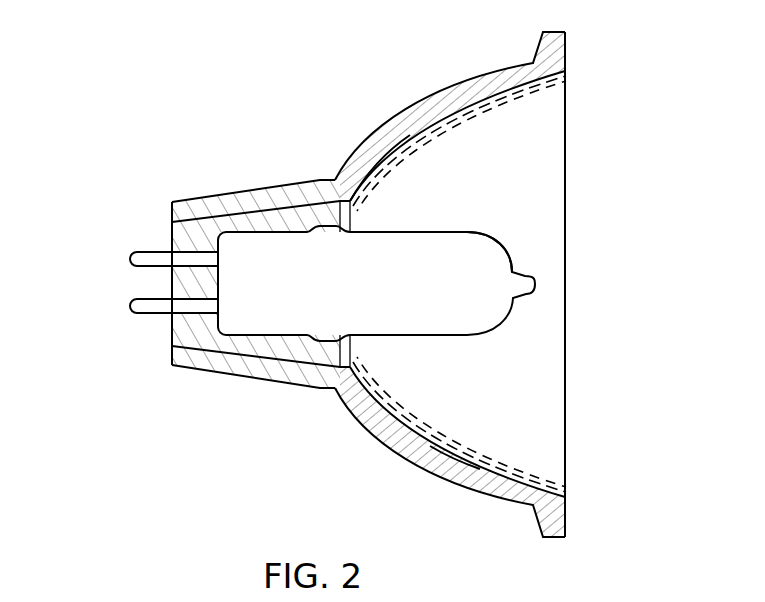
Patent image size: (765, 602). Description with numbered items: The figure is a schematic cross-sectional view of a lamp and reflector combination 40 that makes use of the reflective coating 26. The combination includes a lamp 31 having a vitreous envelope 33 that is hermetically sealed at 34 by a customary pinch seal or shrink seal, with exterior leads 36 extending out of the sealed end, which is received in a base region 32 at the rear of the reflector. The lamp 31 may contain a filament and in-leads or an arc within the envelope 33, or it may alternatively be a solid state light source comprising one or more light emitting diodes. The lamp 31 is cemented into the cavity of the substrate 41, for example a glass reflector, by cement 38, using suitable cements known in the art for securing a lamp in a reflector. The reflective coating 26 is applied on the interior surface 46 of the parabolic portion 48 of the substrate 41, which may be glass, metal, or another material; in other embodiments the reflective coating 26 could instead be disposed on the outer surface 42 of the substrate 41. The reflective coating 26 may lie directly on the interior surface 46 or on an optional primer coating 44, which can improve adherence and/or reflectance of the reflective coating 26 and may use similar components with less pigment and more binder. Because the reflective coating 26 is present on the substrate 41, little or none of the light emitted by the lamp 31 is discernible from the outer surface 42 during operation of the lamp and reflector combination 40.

The lamp and reflector combination 40 is at (618, 166).
The substrate 41 is at (452, 100).
The primer coating 44 is at (432, 134).
The reflective coating 26 is at (528, 88).
The interior surface 46 is at (403, 164).
The parabolic portion 48 is at (457, 452).
The base 32 is at (201, 322).
The pinch seal 34 is at (273, 192).
The cement 38 is at (242, 350).
The outer surface 42 is at (298, 393).
The exterior leads 36 is at (128, 261).
The lamp 31 is at (426, 297).
The vitreous envelope 33 is at (489, 240).